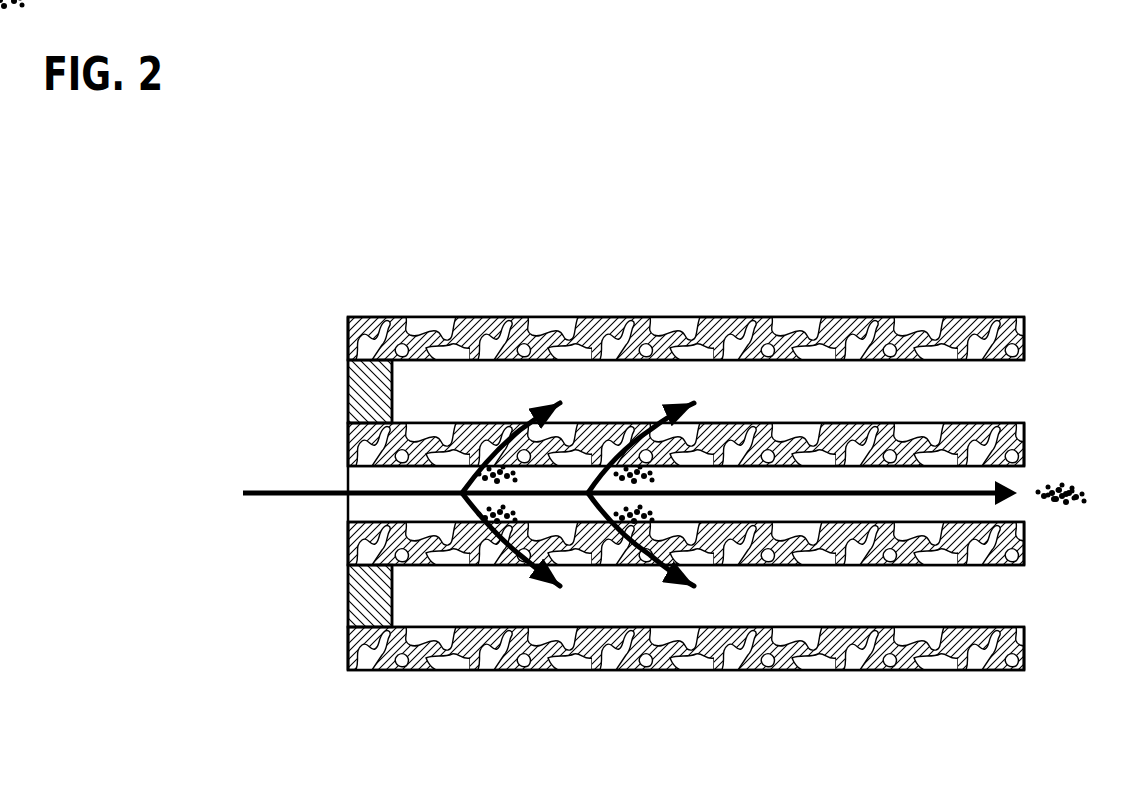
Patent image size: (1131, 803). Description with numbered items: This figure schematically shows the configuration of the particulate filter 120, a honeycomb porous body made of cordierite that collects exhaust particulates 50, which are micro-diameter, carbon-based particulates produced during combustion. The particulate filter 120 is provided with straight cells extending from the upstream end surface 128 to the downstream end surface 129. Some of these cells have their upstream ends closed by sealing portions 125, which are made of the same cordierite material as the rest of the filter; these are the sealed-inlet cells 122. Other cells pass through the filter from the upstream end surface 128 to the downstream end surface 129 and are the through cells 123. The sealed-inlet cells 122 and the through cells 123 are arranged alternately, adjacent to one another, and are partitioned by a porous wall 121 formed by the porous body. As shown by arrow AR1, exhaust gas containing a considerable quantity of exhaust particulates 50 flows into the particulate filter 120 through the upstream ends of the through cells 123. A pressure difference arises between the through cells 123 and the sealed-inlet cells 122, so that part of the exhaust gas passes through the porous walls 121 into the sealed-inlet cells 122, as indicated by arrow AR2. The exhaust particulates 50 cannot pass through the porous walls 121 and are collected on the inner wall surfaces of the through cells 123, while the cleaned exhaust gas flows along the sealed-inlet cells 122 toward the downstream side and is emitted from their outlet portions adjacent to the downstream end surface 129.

The particulate filter 120 is at (677, 463).
The porous wall 121 is at (917, 317).
The sealed-inlet cells 122 is at (462, 388).
The through cells 123 is at (428, 490).
The sealing portions 125 is at (362, 393).
The upstream end surface 128 is at (348, 326).
The downstream end surface 129 is at (1025, 325).
The exhaust particulates 50 is at (532, 477).
The arrow AR1 is at (283, 498).
The arrow AR2 is at (526, 405).